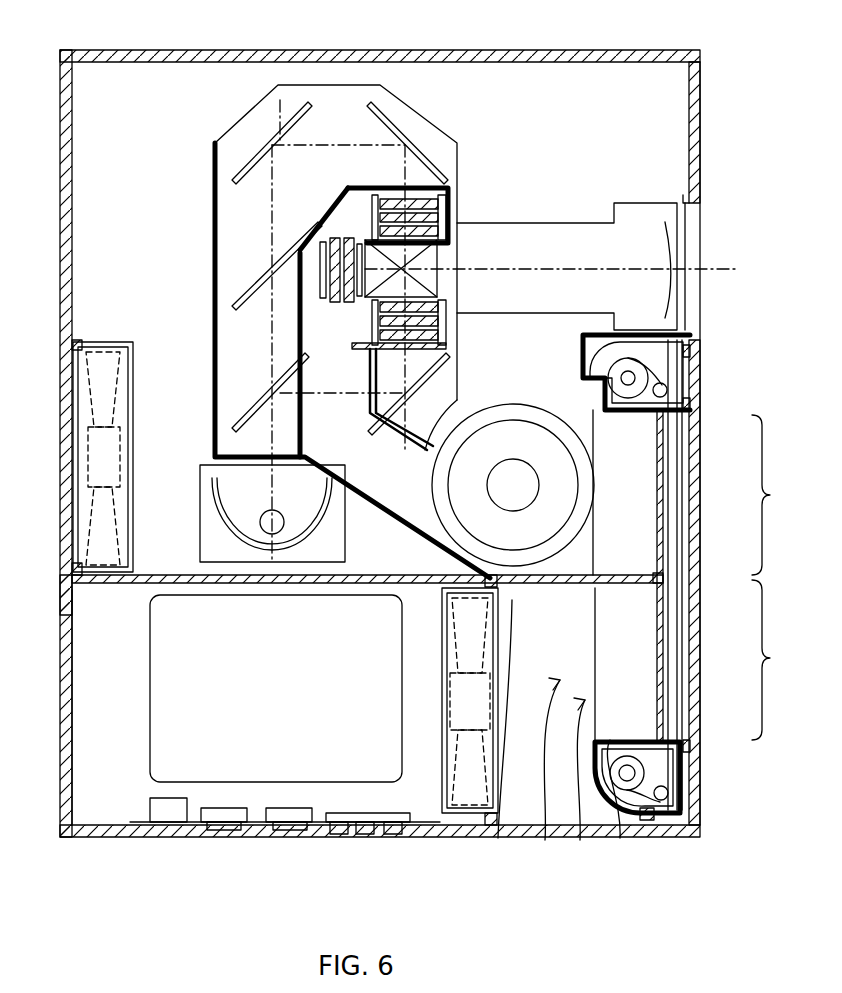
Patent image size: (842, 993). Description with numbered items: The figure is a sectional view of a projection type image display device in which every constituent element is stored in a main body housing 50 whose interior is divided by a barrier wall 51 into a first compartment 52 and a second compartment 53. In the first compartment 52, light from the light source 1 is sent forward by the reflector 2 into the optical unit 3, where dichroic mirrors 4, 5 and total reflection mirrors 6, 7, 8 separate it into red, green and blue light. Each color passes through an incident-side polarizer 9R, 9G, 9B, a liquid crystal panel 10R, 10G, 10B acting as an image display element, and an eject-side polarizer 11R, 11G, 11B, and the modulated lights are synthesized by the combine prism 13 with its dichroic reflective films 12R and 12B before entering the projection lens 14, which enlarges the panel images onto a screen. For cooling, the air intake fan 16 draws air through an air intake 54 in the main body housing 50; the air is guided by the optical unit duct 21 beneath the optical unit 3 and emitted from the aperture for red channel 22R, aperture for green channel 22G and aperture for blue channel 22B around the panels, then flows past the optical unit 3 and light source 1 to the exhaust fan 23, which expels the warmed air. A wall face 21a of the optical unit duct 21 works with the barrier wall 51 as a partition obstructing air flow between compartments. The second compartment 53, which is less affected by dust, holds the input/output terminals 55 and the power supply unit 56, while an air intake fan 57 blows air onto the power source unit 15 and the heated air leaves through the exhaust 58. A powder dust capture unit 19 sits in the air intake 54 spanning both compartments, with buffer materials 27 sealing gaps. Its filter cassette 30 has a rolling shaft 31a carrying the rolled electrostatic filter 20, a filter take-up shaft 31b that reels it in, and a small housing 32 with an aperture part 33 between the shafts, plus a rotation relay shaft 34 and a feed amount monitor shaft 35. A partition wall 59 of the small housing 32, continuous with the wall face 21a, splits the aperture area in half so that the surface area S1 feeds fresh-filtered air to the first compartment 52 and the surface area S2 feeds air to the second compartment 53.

The light source 1 is at (258, 526).
The reflector 2 is at (215, 497).
The optical unit 3 is at (215, 163).
The dichroic mirror 4 is at (240, 417).
The dichroic mirror 5 is at (215, 275).
The total reflection mirror 6 is at (412, 388).
The total reflection mirror 7 is at (280, 98).
The total reflection mirror 8 is at (392, 98).
The incident-side polarizer 9R is at (380, 196).
The incident-side polarizer 9G is at (320, 290).
The incident-side polarizer 9B is at (448, 346).
The liquid crystal panel 10R is at (446, 213).
The liquid crystal panel 10G is at (342, 303).
The liquid crystal panel 10B is at (446, 322).
The eject-side polarizer 11R is at (446, 228).
The eject-side polarizer 11G is at (348, 305).
The eject-side polarizer 11B is at (446, 308).
The dichroic reflective film 12B is at (437, 245).
The dichroic reflective film 12R is at (437, 268).
The combine prism 13 is at (348, 196).
The projection lens 14 is at (628, 222).
The power source unit 15 is at (180, 712).
The air intake fan 16 is at (560, 500).
The powder dust capture unit 19 is at (550, 838).
The electrostatic filter 20 is at (668, 655).
The optical unit duct 21 is at (240, 432).
The wall face 21a is at (500, 838).
The aperture for red channel 22R is at (446, 200).
The aperture for green channel 22G is at (334, 300).
The aperture for blue channel 22B is at (446, 336).
The exhaust fan 23 is at (90, 378).
The buffer material 27 is at (690, 406).
The filter cassette 30 is at (590, 835).
The rolling shaft 31a is at (592, 840).
The filter take-up shaft 31b is at (680, 362).
The small housing 32 is at (680, 370).
The aperture part 33 is at (677, 683).
The rotation relay shaft 34 is at (670, 793).
The feed amount monitor shaft 35 is at (680, 390).
The main body housing 50 is at (72, 120).
The barrier wall 51 is at (68, 590).
The first compartment 52 is at (690, 116).
The second compartment 53 is at (440, 825).
The air intake 54 is at (694, 466).
The input/output terminals 55 is at (403, 843).
The power supply unit 56 is at (170, 835).
The air intake fan 57 is at (470, 832).
The exhaust 58 is at (72, 668).
The partition wall 59 is at (668, 575).
The surface area S1 is at (775, 495).
The surface area S2 is at (777, 660).